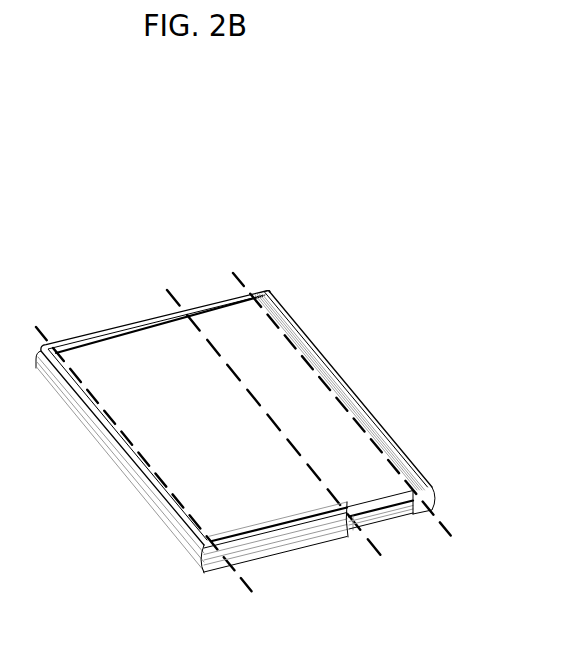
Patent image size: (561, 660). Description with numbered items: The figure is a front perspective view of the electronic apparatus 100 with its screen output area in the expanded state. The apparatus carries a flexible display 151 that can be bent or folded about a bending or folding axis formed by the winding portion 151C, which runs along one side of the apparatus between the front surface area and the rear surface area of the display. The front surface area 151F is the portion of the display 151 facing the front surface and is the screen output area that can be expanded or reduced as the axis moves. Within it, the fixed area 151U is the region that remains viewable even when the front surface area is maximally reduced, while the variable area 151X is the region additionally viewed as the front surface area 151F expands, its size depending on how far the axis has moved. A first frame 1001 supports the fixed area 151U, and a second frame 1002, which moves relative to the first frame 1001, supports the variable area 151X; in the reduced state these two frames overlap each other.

The electronic apparatus 100 is at (74, 192).
The display 151 is at (307, 193).
The front surface area 151F is at (225, 240).
The fixed area 151U is at (128, 348).
The variable area 151X is at (222, 343).
The winding portion 151C is at (288, 299).
The first frame 1001 is at (231, 556).
The second frame 1002 is at (421, 512).